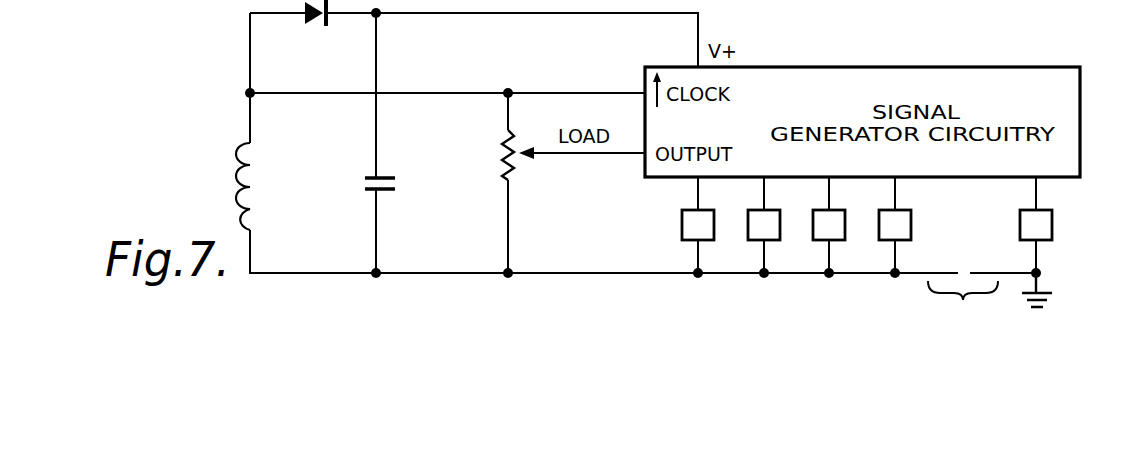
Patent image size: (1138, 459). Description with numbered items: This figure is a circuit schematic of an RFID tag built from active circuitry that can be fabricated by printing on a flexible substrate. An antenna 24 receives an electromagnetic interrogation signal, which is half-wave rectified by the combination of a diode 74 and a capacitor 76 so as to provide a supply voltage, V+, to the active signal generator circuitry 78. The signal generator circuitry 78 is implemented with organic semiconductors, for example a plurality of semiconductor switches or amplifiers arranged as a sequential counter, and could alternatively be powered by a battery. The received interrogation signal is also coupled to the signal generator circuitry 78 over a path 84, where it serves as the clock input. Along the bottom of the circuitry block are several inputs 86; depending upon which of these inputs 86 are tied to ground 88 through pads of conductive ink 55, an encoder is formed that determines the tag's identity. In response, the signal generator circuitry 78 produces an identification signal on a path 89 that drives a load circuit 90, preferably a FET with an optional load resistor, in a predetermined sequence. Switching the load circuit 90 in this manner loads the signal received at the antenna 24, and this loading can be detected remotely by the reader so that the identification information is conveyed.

The antenna 24 is at (246, 144).
The diode 74 is at (318, 26).
The capacitor 76 is at (374, 176).
The path 84 is at (554, 92).
The path 89 is at (613, 156).
The load circuit 90 is at (502, 151).
The signal generator circuitry 78 is at (936, 65).
The inputs 86 is at (1038, 195).
The pads of conductive ink 55 is at (1053, 222).
The ground 88 is at (1053, 293).